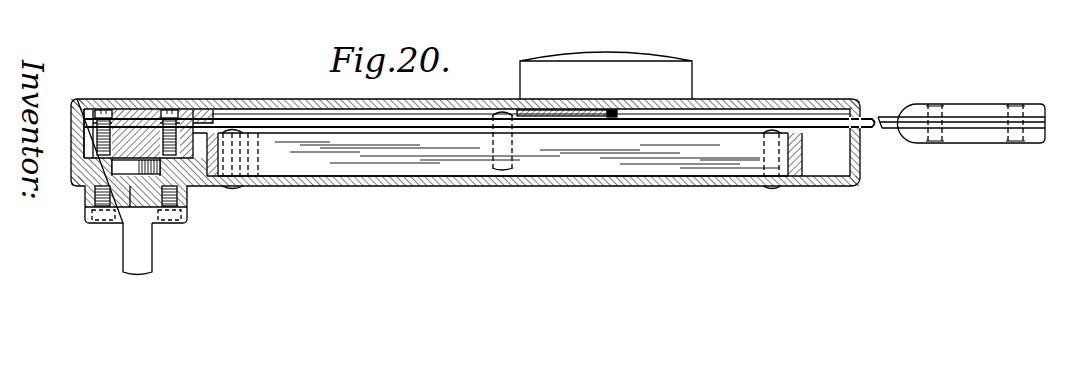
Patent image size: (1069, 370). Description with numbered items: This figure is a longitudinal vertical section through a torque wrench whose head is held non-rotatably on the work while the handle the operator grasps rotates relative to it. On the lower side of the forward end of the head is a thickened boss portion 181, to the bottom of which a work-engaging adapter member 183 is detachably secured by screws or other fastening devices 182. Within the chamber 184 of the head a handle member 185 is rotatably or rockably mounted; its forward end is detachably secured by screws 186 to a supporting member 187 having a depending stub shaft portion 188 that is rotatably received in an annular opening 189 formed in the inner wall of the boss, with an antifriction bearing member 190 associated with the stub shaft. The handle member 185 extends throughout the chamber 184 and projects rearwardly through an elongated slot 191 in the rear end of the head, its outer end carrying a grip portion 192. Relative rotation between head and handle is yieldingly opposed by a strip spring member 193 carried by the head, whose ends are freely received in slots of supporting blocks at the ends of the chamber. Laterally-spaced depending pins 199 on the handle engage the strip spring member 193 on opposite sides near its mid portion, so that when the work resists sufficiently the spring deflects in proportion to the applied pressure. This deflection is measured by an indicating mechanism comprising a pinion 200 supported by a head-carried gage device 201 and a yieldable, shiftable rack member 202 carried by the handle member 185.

The thickened boss portion 181 is at (187, 197).
The screws or other fastening devices 182 is at (170, 218).
The work-engaging adapter member 183 is at (143, 253).
The chamber 184 is at (755, 108).
The handle member 185 is at (872, 117).
The screws 186 is at (182, 110).
The supporting member 187 is at (90, 137).
The stub shaft portion 188 is at (132, 187).
The annular opening 189 is at (84, 167).
The antifriction bearing member 190 is at (160, 168).
The elongated slot 191 is at (862, 138).
The grip portion 192 is at (1000, 87).
The strip spring member 193 is at (397, 163).
The depending pins 199 is at (513, 147).
The pinion 200 is at (613, 113).
The gage device 201 is at (674, 69).
The rack member 202 is at (593, 115).